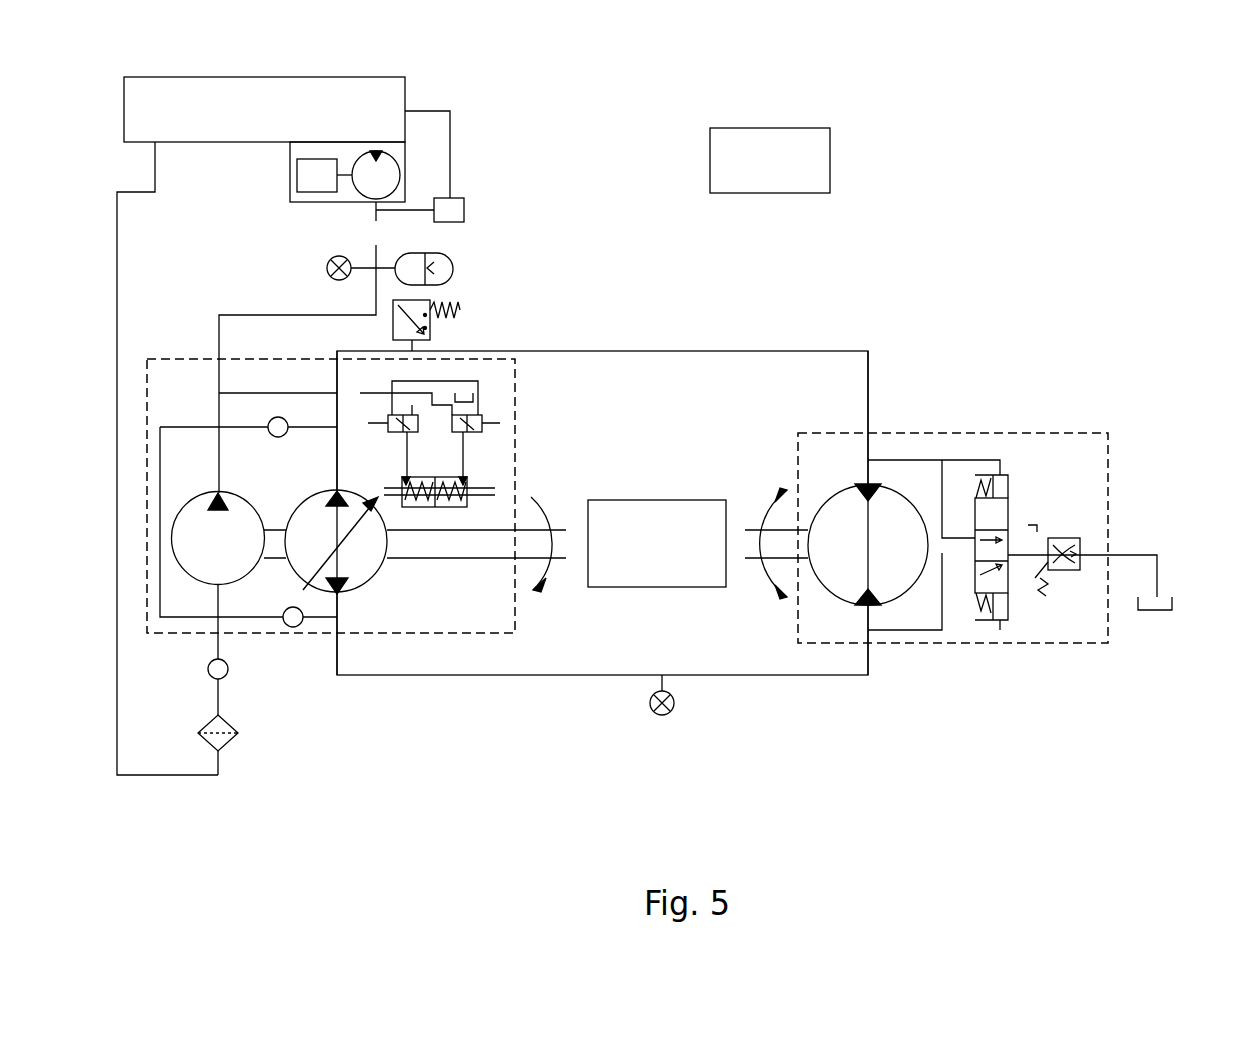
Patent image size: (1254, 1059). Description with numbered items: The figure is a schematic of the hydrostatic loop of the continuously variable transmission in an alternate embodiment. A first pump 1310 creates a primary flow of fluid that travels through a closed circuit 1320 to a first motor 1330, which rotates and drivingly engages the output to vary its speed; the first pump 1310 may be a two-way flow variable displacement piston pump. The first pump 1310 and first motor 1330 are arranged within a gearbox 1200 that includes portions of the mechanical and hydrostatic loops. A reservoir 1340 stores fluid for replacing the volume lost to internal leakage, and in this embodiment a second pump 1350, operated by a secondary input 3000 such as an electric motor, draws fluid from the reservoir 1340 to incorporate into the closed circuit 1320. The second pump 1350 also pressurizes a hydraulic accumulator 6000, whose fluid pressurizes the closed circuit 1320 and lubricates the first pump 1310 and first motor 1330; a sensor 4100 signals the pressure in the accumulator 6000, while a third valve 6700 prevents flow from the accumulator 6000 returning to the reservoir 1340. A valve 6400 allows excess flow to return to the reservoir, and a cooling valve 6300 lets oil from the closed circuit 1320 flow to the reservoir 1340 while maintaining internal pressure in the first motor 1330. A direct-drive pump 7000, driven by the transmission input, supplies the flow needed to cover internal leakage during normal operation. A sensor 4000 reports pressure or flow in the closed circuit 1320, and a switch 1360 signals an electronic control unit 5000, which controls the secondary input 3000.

The gearbox 1200 is at (647, 587).
The first pump 1310 is at (367, 580).
The closed circuit 1320 is at (677, 351).
The first motor 1330 is at (897, 593).
The reservoir 1340 is at (340, 78).
The second pump 1350 is at (395, 175).
The switch 1360 is at (440, 318).
The secondary input 3000 is at (302, 178).
The sensor 4000 is at (662, 715).
The sensor 4100 is at (327, 268).
The electronic control unit 5000 is at (830, 160).
The hydraulic accumulator 6000 is at (453, 268).
The cooling valve 6300 is at (1083, 538).
The valve 6400 is at (464, 200).
The third valve 6700 is at (208, 669).
The direct-drive pump 7000 is at (235, 575).